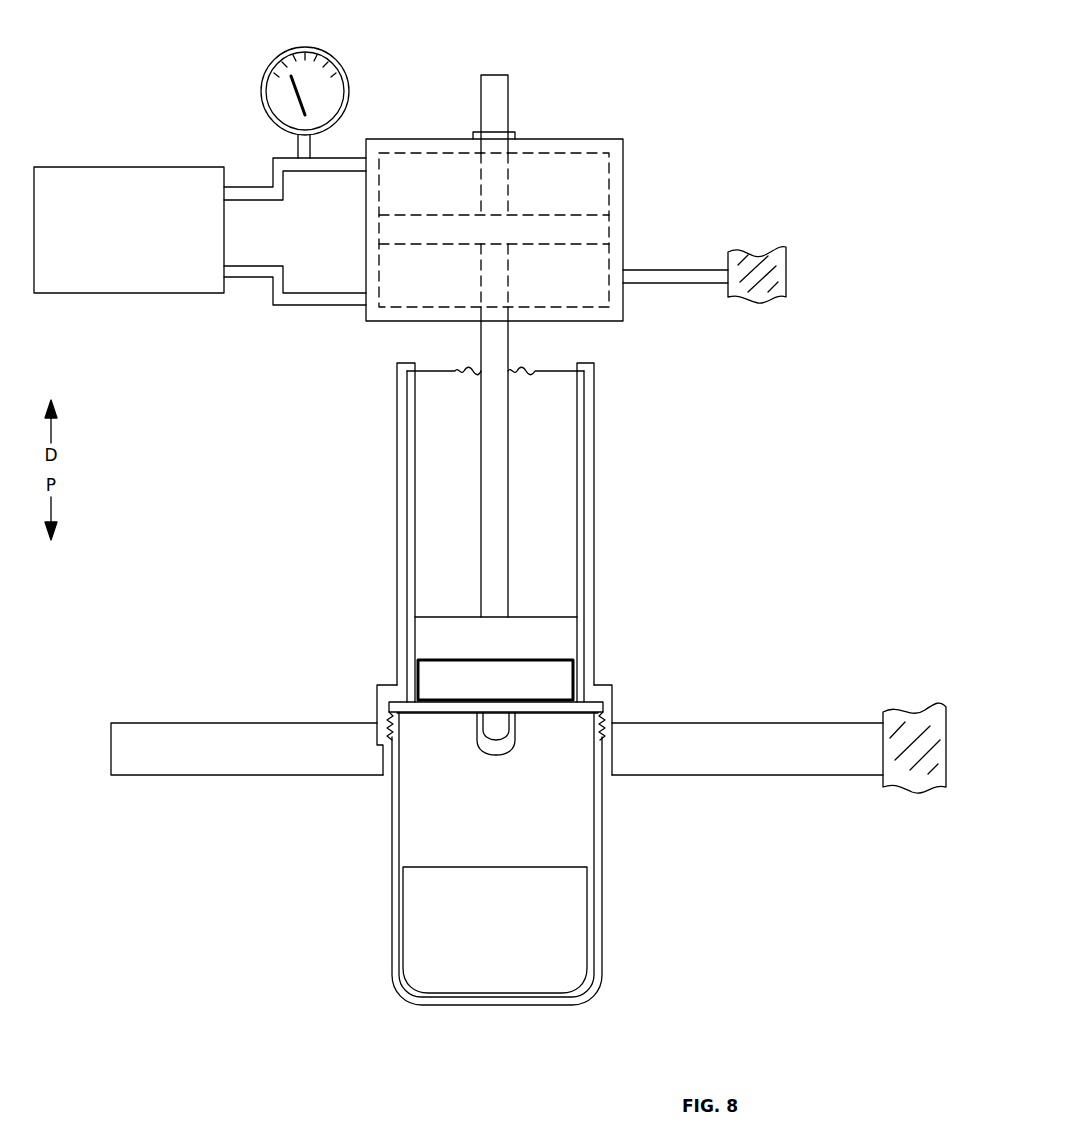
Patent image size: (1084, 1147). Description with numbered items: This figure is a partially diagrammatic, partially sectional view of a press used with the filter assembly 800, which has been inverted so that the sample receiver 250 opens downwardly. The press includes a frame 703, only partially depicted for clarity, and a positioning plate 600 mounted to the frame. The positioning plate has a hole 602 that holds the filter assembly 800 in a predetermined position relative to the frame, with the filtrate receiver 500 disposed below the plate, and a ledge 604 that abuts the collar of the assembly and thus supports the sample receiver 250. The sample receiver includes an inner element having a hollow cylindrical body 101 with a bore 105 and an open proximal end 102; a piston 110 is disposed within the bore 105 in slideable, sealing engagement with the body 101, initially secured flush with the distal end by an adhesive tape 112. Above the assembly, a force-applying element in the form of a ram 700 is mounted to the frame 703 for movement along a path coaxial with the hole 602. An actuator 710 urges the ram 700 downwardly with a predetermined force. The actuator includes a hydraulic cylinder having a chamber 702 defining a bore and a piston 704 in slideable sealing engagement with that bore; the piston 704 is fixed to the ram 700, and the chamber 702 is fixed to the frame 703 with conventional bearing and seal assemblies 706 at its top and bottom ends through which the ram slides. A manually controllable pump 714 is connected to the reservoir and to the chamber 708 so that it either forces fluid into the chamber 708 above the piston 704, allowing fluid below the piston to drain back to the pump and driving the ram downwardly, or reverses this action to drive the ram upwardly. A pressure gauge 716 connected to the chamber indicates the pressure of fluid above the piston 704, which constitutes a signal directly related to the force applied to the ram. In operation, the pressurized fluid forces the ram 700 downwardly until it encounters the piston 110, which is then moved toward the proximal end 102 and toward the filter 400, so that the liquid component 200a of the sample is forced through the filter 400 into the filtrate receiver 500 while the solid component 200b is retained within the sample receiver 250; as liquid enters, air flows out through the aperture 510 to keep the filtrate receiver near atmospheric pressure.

The actuator 710 is at (191, 45).
The pump 714 is at (85, 182).
The pressure gauge 716 is at (284, 50).
The chamber 708 is at (636, 175).
The chamber 702 is at (561, 166).
The piston 704 is at (605, 236).
The bearing and seal assemblies 706 is at (512, 132).
The frame 703 is at (809, 221).
The ram 700 is at (493, 346).
The cylindrical body 101 is at (580, 447).
The adhesive tape 112 is at (562, 366).
The bore 105 is at (550, 484).
The sample receiver 250 is at (365, 529).
The filter assembly 800 is at (297, 629).
The piston 110 is at (548, 633).
The solid component of the sample 200b is at (548, 678).
The proximal end 102 is at (607, 690).
The positioning plate 600 is at (152, 710).
The hole 602 is at (612, 757).
The ledge 604 is at (370, 755).
The filter 400 is at (442, 722).
The filtrate receiver 500 is at (329, 888).
The aperture 510 is at (596, 806).
The liquid component of the sample 200a is at (540, 937).